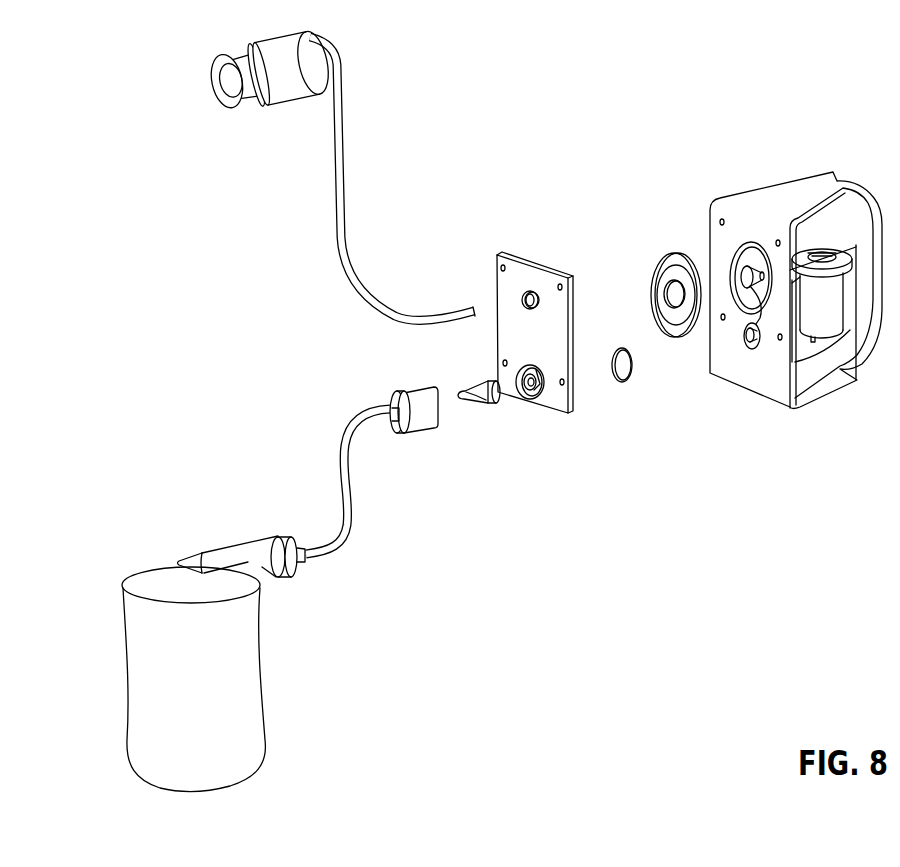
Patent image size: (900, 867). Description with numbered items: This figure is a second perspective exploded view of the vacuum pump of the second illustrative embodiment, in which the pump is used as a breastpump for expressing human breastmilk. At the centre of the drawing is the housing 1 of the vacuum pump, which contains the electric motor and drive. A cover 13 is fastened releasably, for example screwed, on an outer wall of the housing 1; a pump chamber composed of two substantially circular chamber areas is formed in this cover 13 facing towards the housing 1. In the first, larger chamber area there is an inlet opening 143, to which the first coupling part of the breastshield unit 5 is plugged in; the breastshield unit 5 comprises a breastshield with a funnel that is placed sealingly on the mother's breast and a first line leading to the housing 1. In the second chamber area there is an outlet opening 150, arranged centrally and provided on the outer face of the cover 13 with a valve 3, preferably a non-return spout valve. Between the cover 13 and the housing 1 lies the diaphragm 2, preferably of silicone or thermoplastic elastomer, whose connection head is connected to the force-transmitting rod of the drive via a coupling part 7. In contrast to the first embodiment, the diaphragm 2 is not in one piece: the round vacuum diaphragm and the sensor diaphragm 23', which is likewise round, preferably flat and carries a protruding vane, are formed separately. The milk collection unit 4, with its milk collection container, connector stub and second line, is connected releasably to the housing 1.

The housing 1 is at (784, 193).
The diaphragm 2 is at (672, 236).
The valve 3 is at (489, 404).
The milk collection unit 4 is at (162, 515).
The breastshield unit 5 is at (250, 138).
The coupling part 7 is at (756, 349).
The cover 13 is at (521, 262).
The inlet opening 143 is at (535, 293).
The outlet opening 150 is at (533, 394).
The sensor diaphragm 23' is at (636, 405).